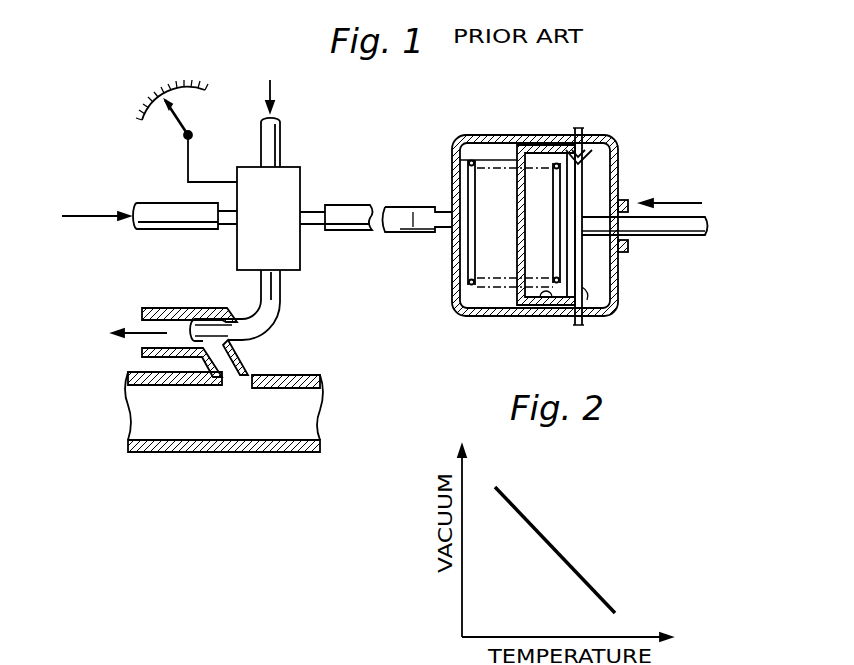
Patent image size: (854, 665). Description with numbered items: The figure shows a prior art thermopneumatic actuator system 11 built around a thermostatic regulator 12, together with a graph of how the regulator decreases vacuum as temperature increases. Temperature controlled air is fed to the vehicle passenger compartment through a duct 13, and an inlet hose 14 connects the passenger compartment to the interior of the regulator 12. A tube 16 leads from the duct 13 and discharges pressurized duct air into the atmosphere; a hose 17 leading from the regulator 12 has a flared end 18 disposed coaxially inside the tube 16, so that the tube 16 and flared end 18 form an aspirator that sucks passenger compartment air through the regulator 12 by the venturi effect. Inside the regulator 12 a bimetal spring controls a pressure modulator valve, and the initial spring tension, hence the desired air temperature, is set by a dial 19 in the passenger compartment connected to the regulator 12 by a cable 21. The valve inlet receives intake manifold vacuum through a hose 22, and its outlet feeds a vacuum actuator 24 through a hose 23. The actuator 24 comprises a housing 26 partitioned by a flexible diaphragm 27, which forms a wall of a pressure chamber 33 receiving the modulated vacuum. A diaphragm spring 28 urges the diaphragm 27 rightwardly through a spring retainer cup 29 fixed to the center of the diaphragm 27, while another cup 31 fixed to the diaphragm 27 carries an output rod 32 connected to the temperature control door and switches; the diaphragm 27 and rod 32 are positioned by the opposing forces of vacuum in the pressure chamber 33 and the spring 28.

The thermopneumatic actuator system 11 is at (401, 150).
The thermostatic regulator 12 is at (288, 186).
The duct 13 is at (306, 375).
The inlet hose 14 is at (281, 128).
The tube 16 is at (153, 308).
The hose 17 is at (274, 291).
The flared end 18 is at (199, 320).
The dial 19 is at (178, 89).
The cable 21 is at (188, 157).
The hose 22 is at (148, 225).
The hose 23 is at (345, 232).
The vacuum actuator 24 is at (536, 125).
The housing 26 is at (571, 135).
The flexible diaphragm 27 is at (592, 140).
The diaphragm spring 28 is at (483, 162).
The spring retainer cup 29 is at (540, 306).
The cup 31 is at (600, 161).
The output rod 32 is at (690, 237).
The pressure chamber 33 is at (484, 258).